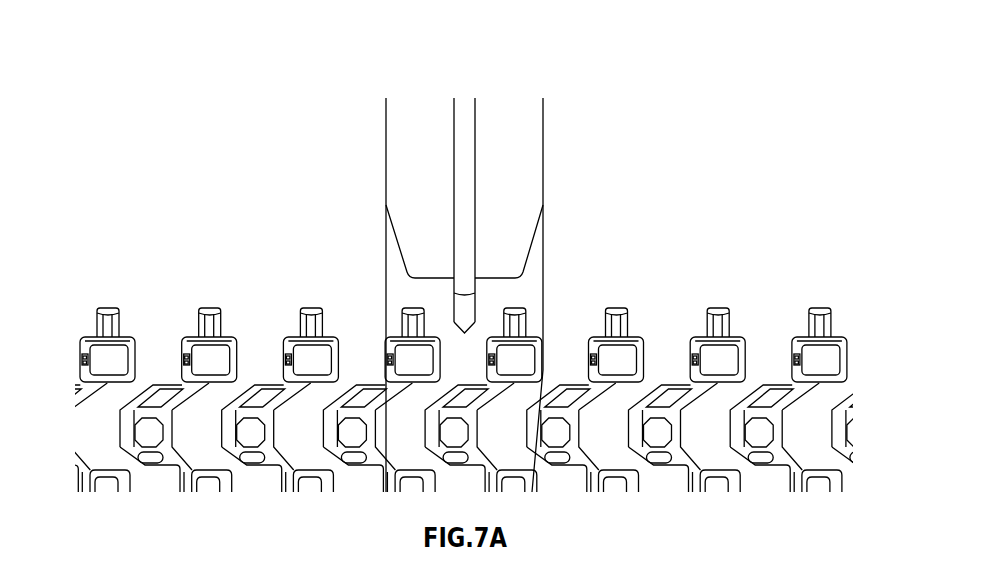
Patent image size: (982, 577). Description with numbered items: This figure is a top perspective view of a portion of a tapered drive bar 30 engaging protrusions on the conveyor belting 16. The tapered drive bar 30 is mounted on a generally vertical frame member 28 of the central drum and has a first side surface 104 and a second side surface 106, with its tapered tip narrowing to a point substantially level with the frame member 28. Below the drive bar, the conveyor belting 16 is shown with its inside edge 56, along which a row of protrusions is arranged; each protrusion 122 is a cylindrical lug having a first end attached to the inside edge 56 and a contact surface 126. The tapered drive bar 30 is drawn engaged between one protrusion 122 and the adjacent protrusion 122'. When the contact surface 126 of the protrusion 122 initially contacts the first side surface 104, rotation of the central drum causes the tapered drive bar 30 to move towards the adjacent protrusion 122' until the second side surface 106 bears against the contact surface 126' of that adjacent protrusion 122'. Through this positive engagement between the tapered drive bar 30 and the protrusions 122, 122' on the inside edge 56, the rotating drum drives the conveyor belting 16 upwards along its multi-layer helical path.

The tapered drive bar 30 is at (466, 112).
The frame member 28 is at (491, 117).
The first side surface 104 is at (454, 192).
The second side surface 106 is at (475, 192).
The contact surface 126 is at (366, 291).
The protrusion 122 is at (364, 328).
The contact surface of adjacent protrusion 126' is at (570, 292).
The adjacent protrusion 122' is at (580, 329).
The inside edge 56 is at (737, 335).
The conveyor belting 16 is at (705, 470).